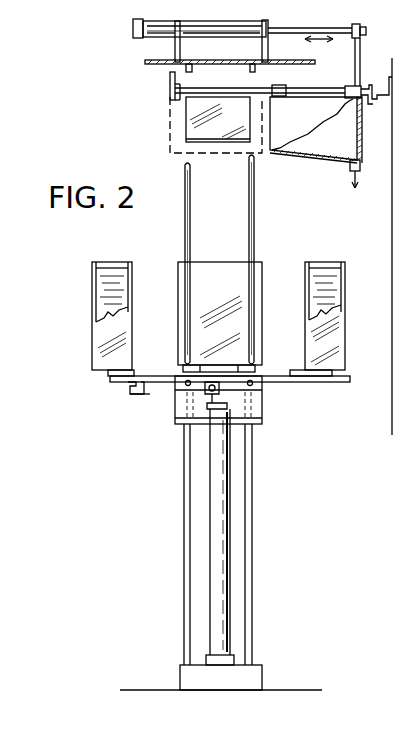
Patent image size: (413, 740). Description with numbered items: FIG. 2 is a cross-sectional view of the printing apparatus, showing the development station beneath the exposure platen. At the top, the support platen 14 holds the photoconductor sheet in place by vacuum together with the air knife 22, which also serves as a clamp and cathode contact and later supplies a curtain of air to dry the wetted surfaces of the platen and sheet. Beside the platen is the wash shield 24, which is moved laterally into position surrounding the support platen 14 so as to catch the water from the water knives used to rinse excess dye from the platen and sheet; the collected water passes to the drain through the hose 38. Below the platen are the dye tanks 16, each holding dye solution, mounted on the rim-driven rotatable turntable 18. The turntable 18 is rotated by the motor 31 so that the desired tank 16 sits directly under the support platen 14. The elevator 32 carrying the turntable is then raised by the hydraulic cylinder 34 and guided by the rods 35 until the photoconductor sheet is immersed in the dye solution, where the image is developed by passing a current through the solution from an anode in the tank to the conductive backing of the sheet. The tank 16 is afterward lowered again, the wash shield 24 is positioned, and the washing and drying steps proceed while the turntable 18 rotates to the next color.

The support platen 14 is at (196, 104).
The dye tank 16 is at (170, 132).
The turntable 18 is at (168, 378).
The air knife 22 is at (262, 81).
The wash shield 24 is at (318, 137).
The motor 31 is at (130, 388).
The elevator 32 is at (272, 395).
The hydraulic cylinder 34 is at (214, 542).
The guide rod 35 is at (252, 68).
The hose 38 is at (352, 167).